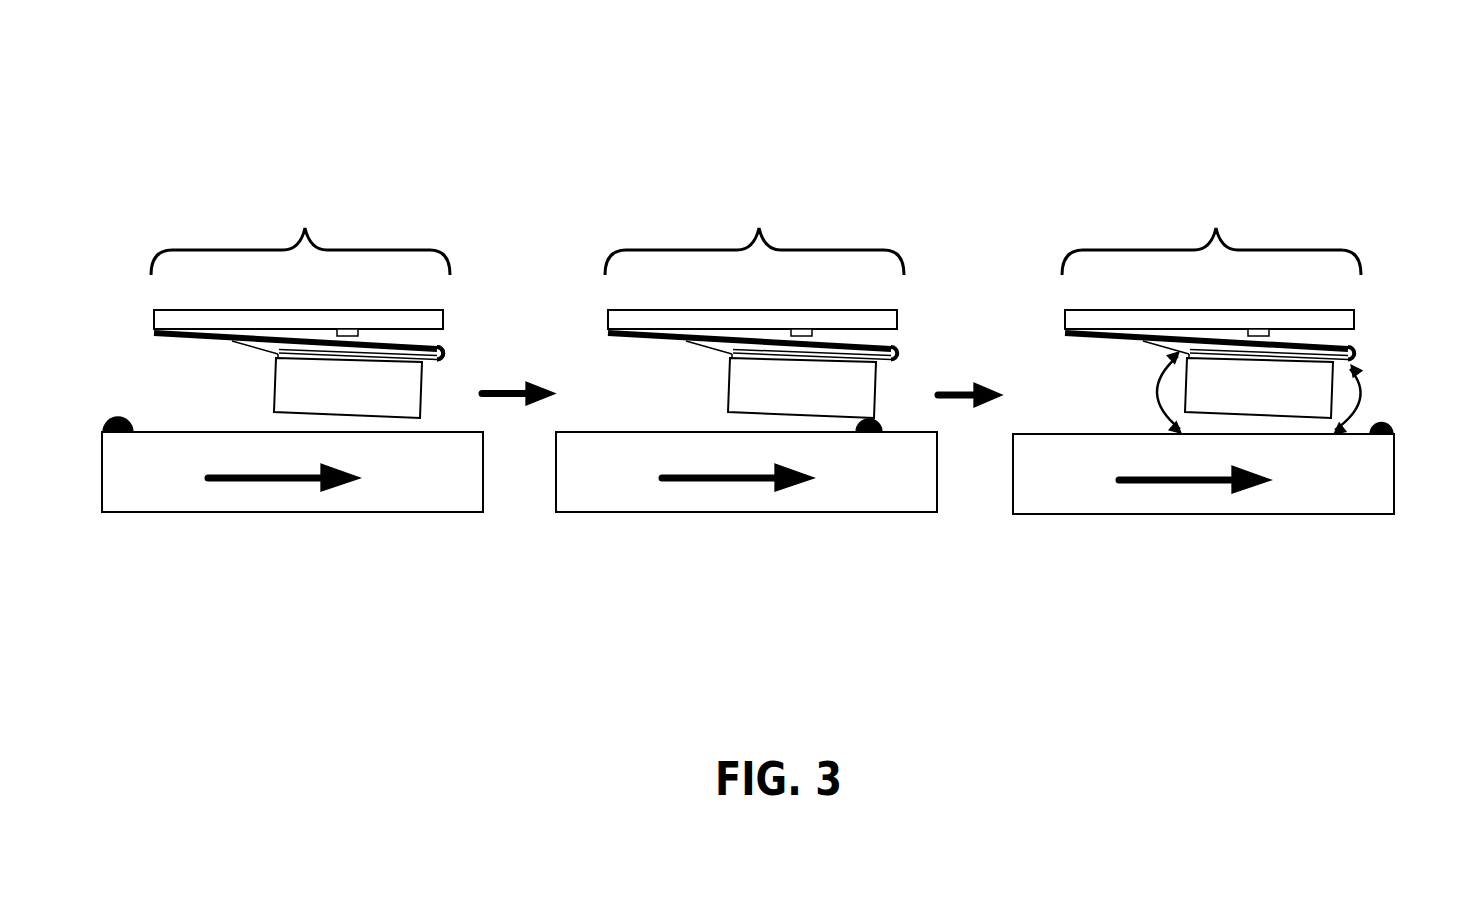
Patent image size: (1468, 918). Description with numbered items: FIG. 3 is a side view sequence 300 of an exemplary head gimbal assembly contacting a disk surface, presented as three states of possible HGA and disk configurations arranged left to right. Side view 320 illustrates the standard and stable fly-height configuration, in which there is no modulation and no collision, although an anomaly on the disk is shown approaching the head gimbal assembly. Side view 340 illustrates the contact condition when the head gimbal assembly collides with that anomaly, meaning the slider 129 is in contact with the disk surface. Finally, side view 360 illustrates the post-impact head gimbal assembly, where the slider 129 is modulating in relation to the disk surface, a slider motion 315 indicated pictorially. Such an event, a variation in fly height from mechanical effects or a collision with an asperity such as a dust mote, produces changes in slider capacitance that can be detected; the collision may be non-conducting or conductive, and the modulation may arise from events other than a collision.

The sequence of slider loading operation 300 is at (728, 77).
The slider 129 is at (434, 383).
The slider pitch rotation 315 is at (1296, 386).
The side view 320 is at (300, 377).
The side view 340 is at (746, 377).
The side view 360 is at (1224, 377).